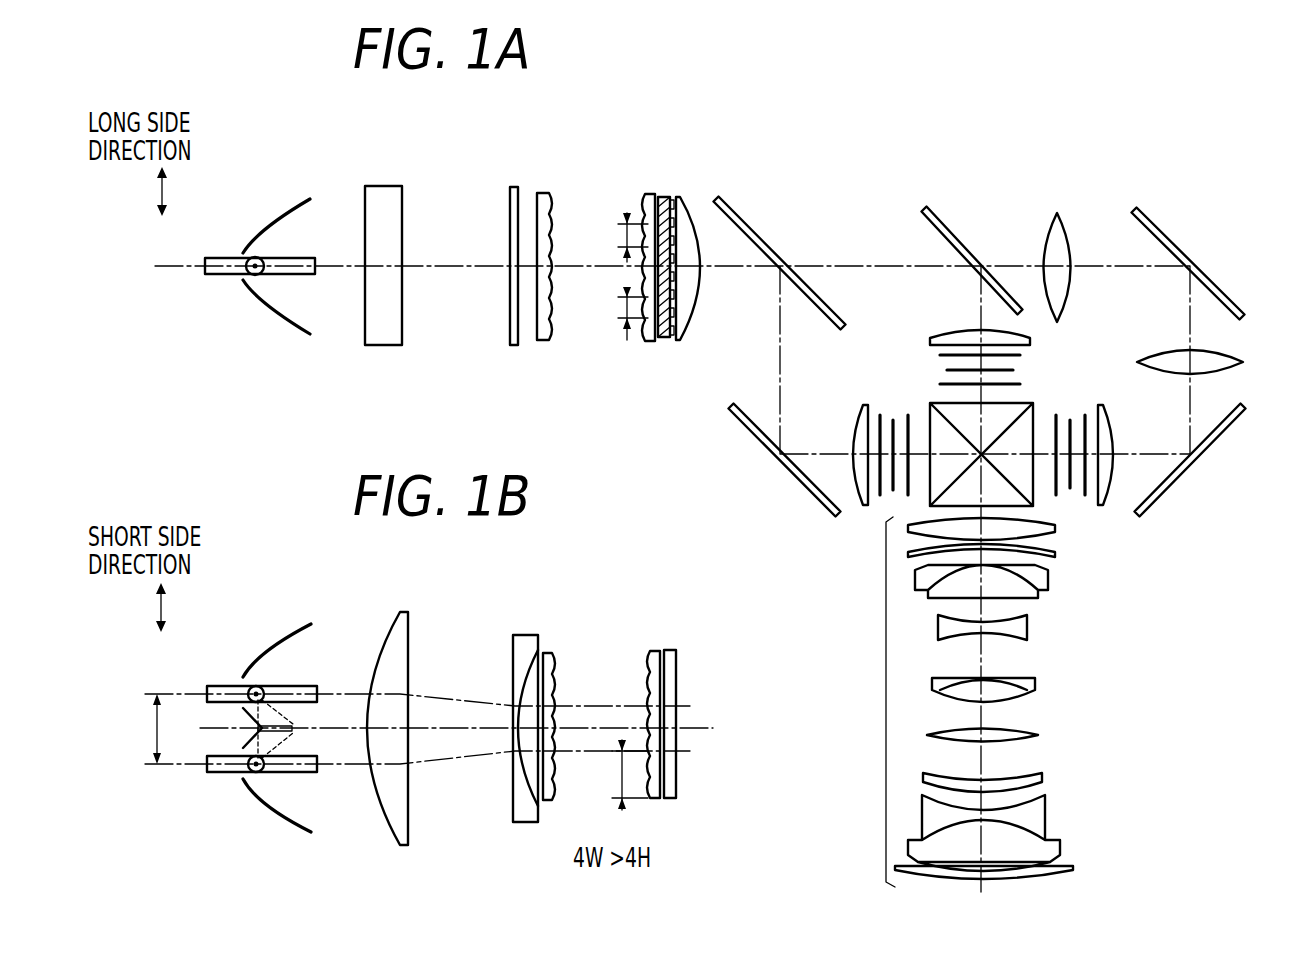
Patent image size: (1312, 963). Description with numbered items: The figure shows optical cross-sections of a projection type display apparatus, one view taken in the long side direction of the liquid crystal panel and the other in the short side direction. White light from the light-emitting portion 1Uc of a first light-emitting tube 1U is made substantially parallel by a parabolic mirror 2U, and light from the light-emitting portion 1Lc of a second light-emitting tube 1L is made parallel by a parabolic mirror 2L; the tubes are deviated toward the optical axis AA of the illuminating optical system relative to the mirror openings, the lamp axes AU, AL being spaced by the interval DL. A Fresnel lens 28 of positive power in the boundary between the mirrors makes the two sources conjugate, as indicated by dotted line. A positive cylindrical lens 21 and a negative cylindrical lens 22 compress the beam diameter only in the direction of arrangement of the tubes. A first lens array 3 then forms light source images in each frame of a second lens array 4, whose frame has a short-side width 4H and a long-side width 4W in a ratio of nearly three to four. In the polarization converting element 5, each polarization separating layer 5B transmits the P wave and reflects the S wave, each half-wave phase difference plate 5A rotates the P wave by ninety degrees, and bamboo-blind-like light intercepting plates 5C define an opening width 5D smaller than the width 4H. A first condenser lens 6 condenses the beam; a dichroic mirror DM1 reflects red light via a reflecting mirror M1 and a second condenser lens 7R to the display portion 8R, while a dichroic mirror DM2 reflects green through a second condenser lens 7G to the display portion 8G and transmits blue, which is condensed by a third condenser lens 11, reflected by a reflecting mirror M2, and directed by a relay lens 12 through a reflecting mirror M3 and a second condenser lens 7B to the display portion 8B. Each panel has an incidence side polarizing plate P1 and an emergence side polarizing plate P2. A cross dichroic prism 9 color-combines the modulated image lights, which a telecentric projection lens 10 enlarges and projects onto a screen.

In FIG. 1A, the first light-emitting tube 1U is at (262, 258).
In FIG. 1B, the first light-emitting tube 1U is at (262, 686).
In FIG. 1A, the light-emitting portion 1Uc is at (262, 275).
In FIG. 1B, the light-emitting portion 1Uc is at (252, 688).
In FIG. 1B, the second light-emitting tube 1L is at (265, 772).
In FIG. 1B, the light-emitting portion 1Lc is at (258, 775).
In FIG. 1A, the parabolic mirror 2U is at (262, 226).
In FIG. 1B, the parabolic mirror 2U is at (280, 636).
In FIG. 1B, the parabolic mirror 2L is at (278, 822).
In FIG. 1A, the positive cylindrical lens 21 is at (384, 186).
In FIG. 1B, the positive cylindrical lens 21 is at (408, 612).
In FIG. 1A, the negative cylindrical lens 22 is at (513, 187).
In FIG. 1B, the negative cylindrical lens 22 is at (525, 635).
In FIG. 1B, the Fresnel lens 28 is at (245, 720).
In FIG. 1A, the first lens array 3 is at (541, 193).
In FIG. 1B, the first lens array 3 is at (553, 652).
In FIG. 1A, the second lens array 4 is at (647, 197).
In FIG. 1B, the second lens array 4 is at (648, 652).
In FIG. 1A, the polarization converting element 5 is at (664, 197).
In FIG. 1B, the polarization converting element 5 is at (670, 650).
In FIG. 1A, the λ/2 phase difference plate 5A is at (672, 198).
In FIG. 1A, the polarization separating layer 5B is at (660, 200).
In FIG. 1A, the light intercepting plate 5C is at (664, 338).
In FIG. 1A, the opening width 5D is at (615, 313).
In FIG. 1A, the frame width in long side direction 4W is at (612, 237).
In FIG. 1B, the frame width in short side direction 4H is at (611, 775).
In FIG. 1A, the first condenser lens 6 is at (688, 215).
In FIG. 1A, the optical axis AA is at (462, 262).
In FIG. 1B, the optical axis AA is at (462, 725).
In FIG. 1B, the upper lamp optical axis AU is at (355, 690).
In FIG. 1B, the lower lamp optical axis AL is at (352, 770).
In FIG. 1B, the interval between light sources DL is at (140, 729).
In FIG. 1A, the dichroic mirror DM1 is at (760, 237).
In FIG. 1A, the dichroic mirror DM2 is at (958, 243).
In FIG. 1A, the reflecting mirror M1 is at (775, 458).
In FIG. 1A, the reflecting mirror M2 is at (1172, 240).
In FIG. 1A, the reflecting mirror M3 is at (1213, 440).
In FIG. 1A, the third condenser lens 11 is at (1065, 230).
In FIG. 1A, the relay lens 12 is at (1243, 360).
In FIG. 1A, the second condenser lens 7R is at (855, 410).
In FIG. 1A, the second condenser lens 7G is at (945, 335).
In FIG. 1A, the second condenser lens 7B is at (1112, 420).
In FIG. 1A, the display portion 8R is at (880, 413).
In FIG. 1A, the display portion 8G is at (1015, 370).
In FIG. 1A, the display portion 8B is at (1072, 490).
In FIG. 1A, the incidence side polarizing plate P1 is at (1022, 357).
In FIG. 1A, the emergence side polarizing plate P2 is at (905, 413).
In FIG. 1A, the cross dichroic prism 9 is at (1035, 405).
In FIG. 1A, the projection lens 10 is at (886, 685).